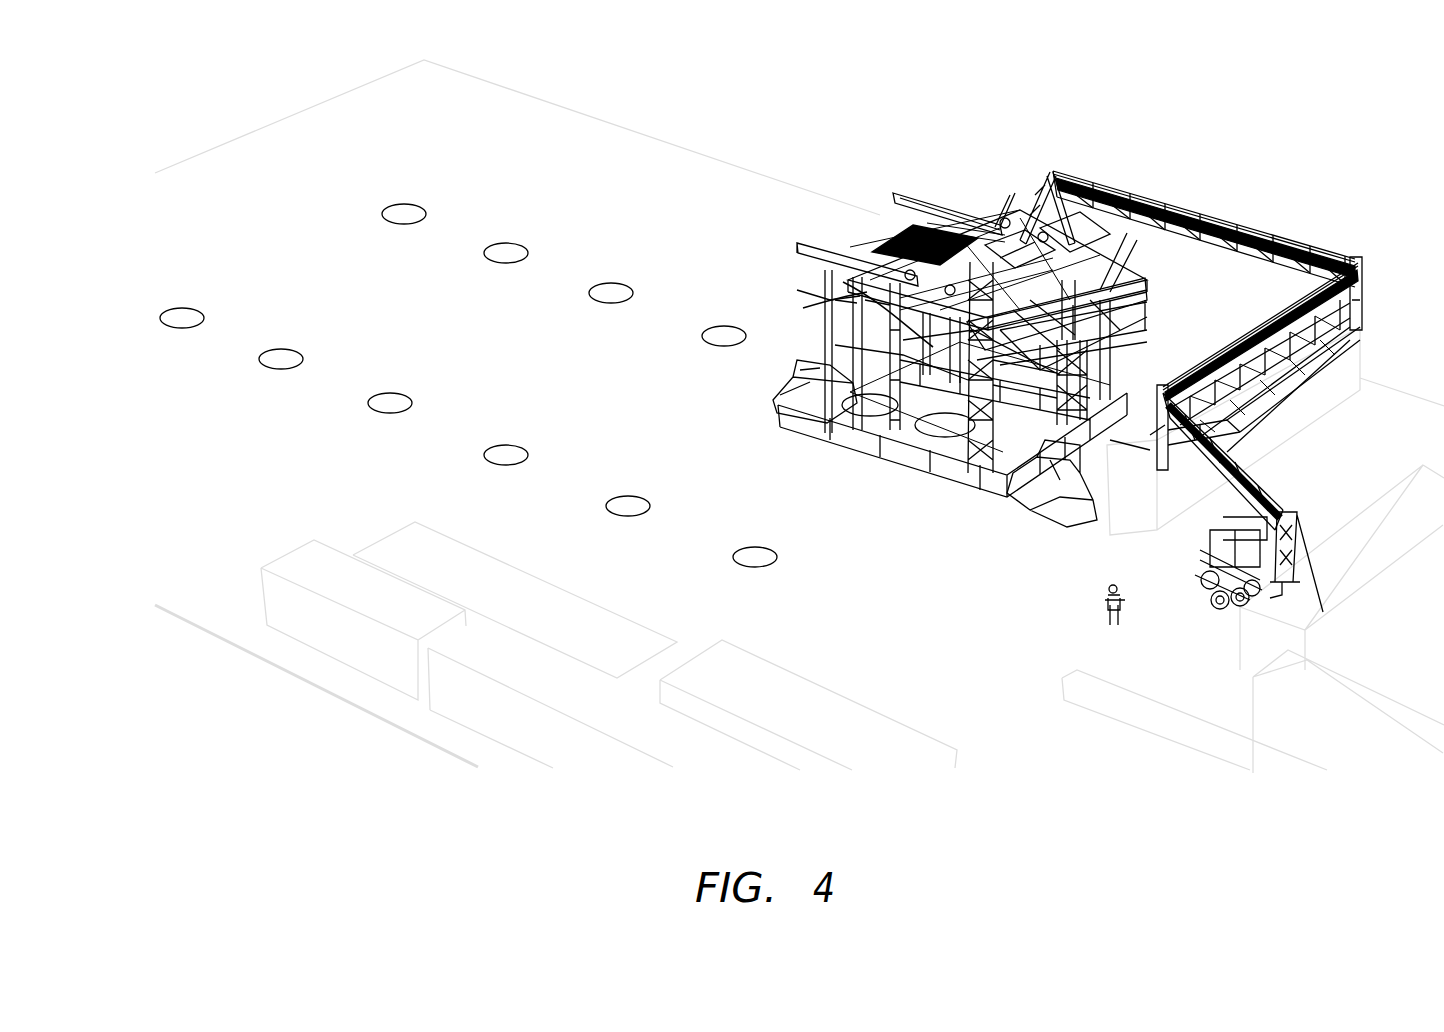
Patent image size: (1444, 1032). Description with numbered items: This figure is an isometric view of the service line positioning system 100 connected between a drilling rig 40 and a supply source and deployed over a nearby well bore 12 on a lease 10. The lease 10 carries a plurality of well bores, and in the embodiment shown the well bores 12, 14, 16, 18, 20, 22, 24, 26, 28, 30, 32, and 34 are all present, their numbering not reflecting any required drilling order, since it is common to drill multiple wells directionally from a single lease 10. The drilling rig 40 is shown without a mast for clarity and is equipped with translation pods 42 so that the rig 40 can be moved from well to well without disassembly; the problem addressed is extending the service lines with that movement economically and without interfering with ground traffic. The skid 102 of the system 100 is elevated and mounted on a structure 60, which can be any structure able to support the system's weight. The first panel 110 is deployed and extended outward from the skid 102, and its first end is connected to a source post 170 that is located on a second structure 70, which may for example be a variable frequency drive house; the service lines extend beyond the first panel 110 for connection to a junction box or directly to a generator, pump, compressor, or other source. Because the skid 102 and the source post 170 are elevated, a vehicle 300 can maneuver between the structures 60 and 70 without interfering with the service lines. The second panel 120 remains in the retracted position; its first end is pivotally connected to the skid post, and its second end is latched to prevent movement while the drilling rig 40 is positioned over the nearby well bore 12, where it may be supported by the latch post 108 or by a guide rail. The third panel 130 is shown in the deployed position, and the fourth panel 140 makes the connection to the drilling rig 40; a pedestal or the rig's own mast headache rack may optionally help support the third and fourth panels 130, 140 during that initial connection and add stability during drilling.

The lease 10 is at (498, 93).
The well bore 12 is at (968, 408).
The well bore 14 is at (833, 400).
The well bore 16 is at (705, 339).
The well bore 18 is at (593, 297).
The well bore 20 is at (486, 258).
The well bore 22 is at (383, 218).
The well bore 24 is at (168, 324).
The well bore 26 is at (262, 364).
The well bore 28 is at (371, 408).
The well bore 30 is at (486, 459).
The well bore 32 is at (607, 509).
The well bore 34 is at (733, 561).
The drilling rig 40 is at (945, 200).
The translation pods 42 is at (1040, 518).
The structure 60 is at (1362, 357).
The second structure 70 is at (1405, 490).
The service line positioning system 100 is at (1243, 190).
The skid 102 is at (1375, 333).
The latch post 108 is at (1372, 305).
The first panel 110 is at (1250, 482).
The second panel 120 is at (1270, 326).
The third panel 130 is at (1105, 182).
The fourth panel 140 is at (1036, 182).
The source post 170 is at (1290, 513).
The vehicle 300 is at (1212, 548).